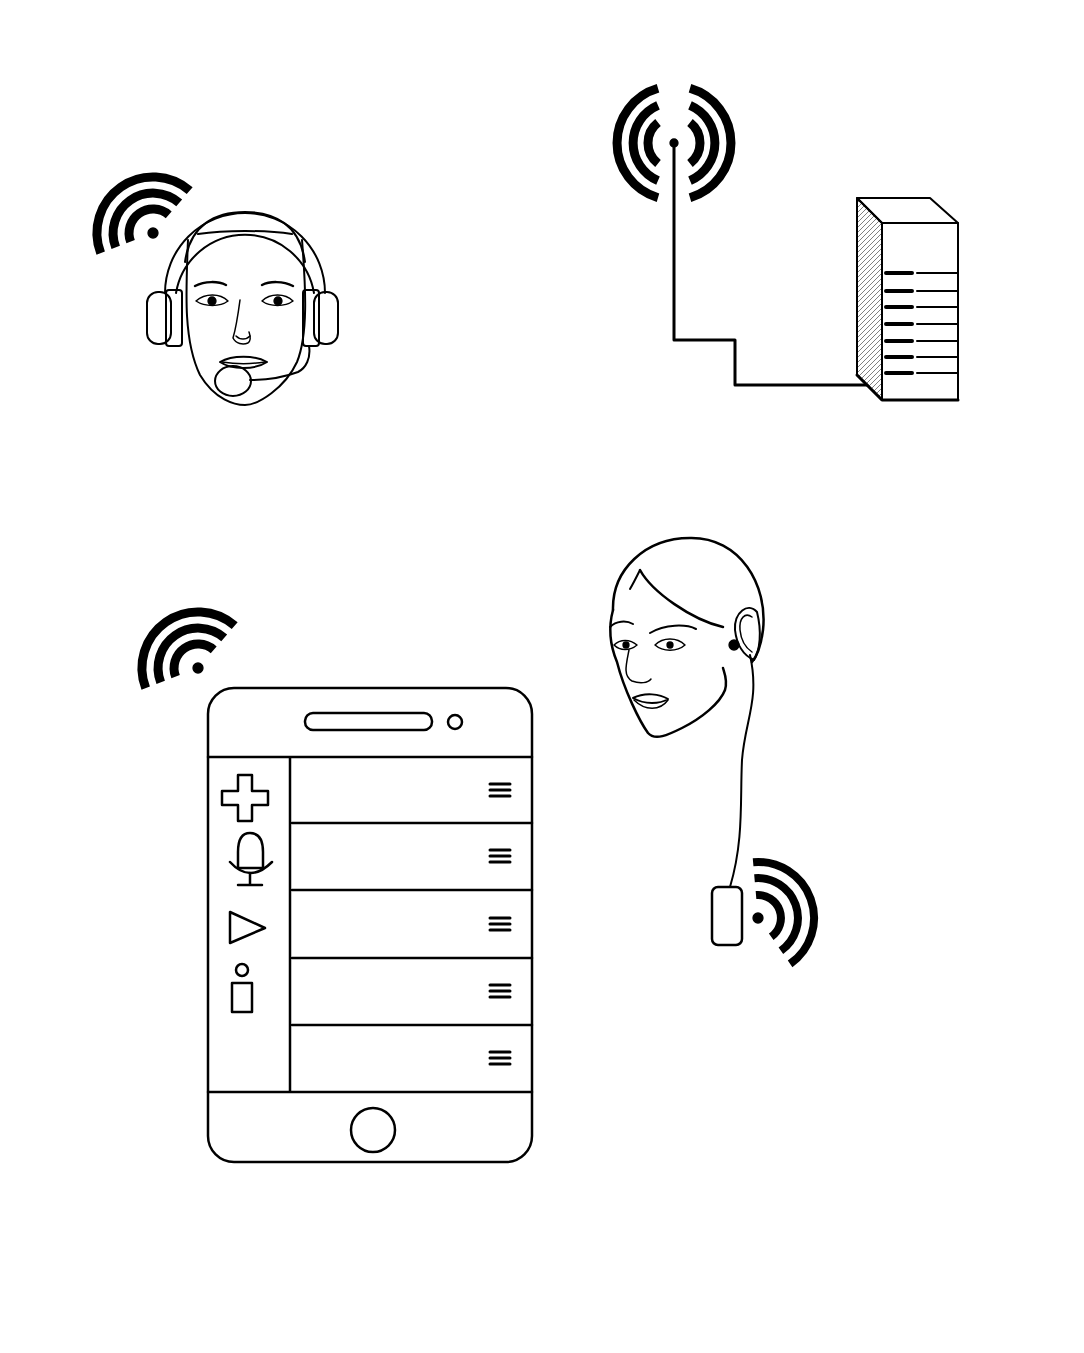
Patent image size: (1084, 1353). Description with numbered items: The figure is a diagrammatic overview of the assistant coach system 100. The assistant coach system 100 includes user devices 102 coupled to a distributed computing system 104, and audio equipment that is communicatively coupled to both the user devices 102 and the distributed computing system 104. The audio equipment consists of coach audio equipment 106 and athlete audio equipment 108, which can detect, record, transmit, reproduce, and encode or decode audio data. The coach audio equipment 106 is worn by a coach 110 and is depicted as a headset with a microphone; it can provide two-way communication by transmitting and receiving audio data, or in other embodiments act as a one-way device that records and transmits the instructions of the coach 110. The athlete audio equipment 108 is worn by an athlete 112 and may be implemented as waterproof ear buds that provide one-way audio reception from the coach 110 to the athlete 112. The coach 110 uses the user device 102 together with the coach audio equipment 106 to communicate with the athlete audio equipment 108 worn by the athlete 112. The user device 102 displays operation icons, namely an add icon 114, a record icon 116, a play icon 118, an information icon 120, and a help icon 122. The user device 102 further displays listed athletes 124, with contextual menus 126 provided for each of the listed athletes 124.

The assistant coach system 100 is at (155, 38).
The user device 102 is at (325, 666).
The distributed computing system 104 is at (807, 434).
The coach audio equipment 106 is at (338, 322).
The athlete audio equipment 108 is at (745, 612).
The coach 110 is at (242, 428).
The athlete 112 is at (728, 570).
The add icon 114 is at (191, 797).
The record icon 116 is at (191, 848).
The play icon 118 is at (191, 925).
The information icon 120 is at (191, 993).
The help icon 122 is at (191, 1062).
The listed athletes 124 is at (413, 1082).
The contextual menus 126 is at (508, 1058).